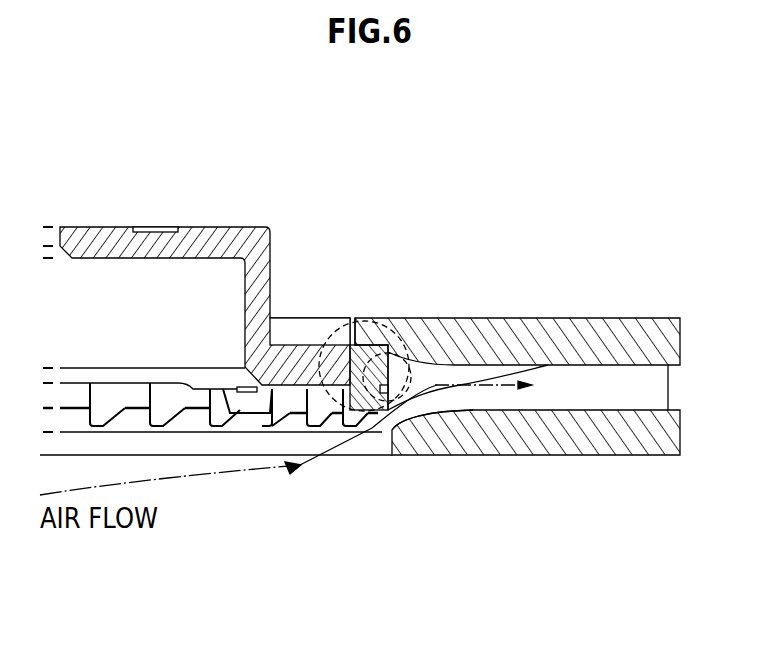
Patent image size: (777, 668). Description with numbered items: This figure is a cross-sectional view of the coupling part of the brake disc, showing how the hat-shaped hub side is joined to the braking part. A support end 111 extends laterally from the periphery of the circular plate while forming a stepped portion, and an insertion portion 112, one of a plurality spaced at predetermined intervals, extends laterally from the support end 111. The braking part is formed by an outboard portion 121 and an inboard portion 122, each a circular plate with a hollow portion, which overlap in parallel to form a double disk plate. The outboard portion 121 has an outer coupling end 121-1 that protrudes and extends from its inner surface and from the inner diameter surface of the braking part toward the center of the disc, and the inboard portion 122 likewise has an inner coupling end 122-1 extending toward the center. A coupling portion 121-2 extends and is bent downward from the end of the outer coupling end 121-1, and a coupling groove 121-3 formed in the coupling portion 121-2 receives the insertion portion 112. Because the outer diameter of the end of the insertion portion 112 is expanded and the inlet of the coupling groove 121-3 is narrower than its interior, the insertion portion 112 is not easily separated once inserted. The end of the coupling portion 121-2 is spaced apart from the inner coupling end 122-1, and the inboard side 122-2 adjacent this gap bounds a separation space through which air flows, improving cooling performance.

The support end 111 is at (263, 273).
The insertion portion 112 is at (305, 372).
The outboard portion 121 is at (507, 276).
The outer coupling end 121-1 is at (547, 321).
The coupling portion 121-2 is at (405, 357).
The coupling groove 121-3 is at (395, 306).
The inboard portion 122 is at (531, 518).
The inner coupling end 122-1 is at (562, 455).
The flared inlet portion 122-2 is at (439, 486).